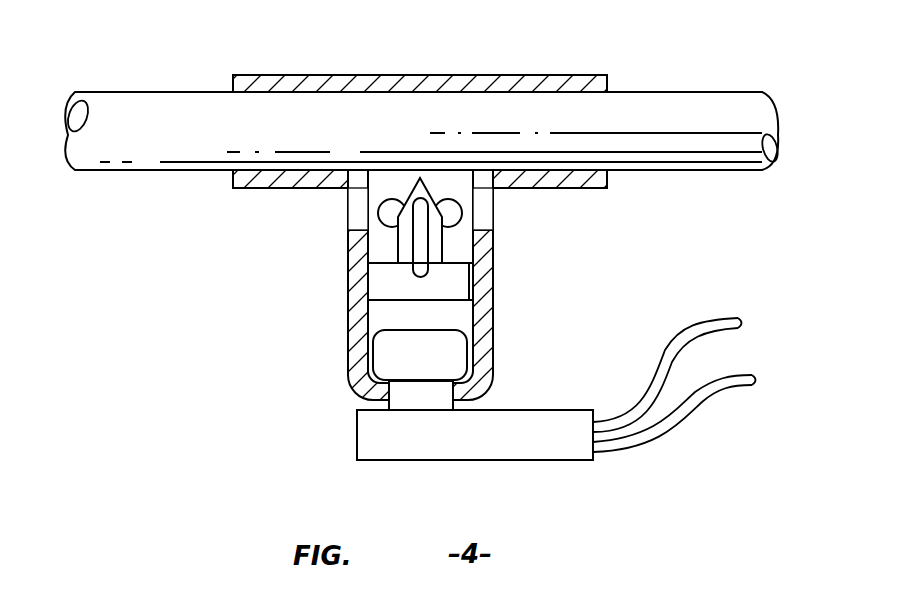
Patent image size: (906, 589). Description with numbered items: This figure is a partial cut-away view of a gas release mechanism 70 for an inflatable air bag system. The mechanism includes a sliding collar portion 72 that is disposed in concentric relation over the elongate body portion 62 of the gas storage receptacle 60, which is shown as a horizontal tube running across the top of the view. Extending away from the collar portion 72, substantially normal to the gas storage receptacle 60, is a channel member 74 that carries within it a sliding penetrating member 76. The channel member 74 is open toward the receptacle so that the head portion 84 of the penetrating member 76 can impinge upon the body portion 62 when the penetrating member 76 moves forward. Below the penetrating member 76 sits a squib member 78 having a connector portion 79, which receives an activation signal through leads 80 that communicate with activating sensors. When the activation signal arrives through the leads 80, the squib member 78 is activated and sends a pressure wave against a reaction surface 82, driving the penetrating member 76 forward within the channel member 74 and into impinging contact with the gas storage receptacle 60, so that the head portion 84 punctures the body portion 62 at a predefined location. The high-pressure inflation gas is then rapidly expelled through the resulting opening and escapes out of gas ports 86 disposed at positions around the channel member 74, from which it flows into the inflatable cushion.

The gas storage receptacle 60 is at (655, 90).
The elongate body portion 62 is at (735, 90).
The gas release mechanism 70 is at (346, 298).
The sliding collar portion 72 is at (300, 75).
The channel member 74 is at (495, 287).
The penetrating member 76 is at (445, 256).
The squib member 78 is at (392, 363).
The connector portion 79 is at (600, 462).
The leads 80 is at (722, 318).
The reaction surface 82 is at (448, 303).
The head portion 84 is at (388, 216).
The gas ports 86 is at (355, 215).